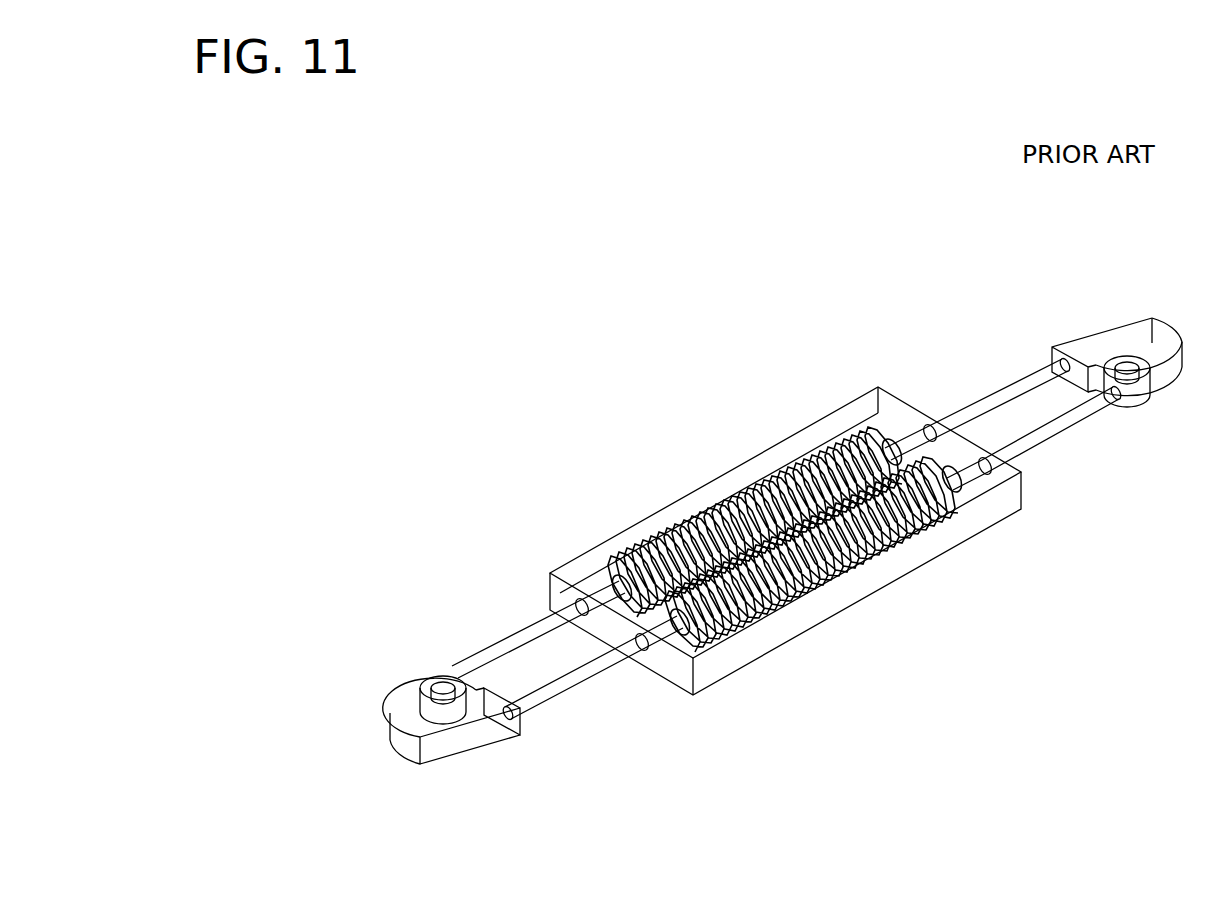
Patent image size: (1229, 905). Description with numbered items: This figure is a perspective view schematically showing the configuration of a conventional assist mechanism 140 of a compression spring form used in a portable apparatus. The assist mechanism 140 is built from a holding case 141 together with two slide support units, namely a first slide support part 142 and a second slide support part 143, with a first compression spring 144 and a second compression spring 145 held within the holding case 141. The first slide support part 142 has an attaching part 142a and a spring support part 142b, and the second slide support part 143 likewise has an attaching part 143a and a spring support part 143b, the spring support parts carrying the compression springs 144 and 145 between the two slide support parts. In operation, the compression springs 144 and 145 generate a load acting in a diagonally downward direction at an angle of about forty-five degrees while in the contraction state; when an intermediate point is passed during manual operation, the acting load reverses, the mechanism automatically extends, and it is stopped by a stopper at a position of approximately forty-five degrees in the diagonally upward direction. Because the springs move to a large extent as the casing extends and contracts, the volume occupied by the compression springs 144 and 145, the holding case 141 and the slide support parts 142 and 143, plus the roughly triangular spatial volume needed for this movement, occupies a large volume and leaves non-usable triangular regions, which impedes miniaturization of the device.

The assist mechanism 140 is at (1160, 256).
The holding case 141 is at (782, 442).
The first slide support part 142 is at (480, 745).
The attaching part 142a is at (430, 683).
The spring support part 142b is at (630, 598).
The second slide support part 143 is at (1088, 333).
The attaching part 143a is at (1145, 385).
The spring support part 143b is at (945, 500).
The first compression spring 144 is at (698, 530).
The second compression spring 145 is at (830, 577).